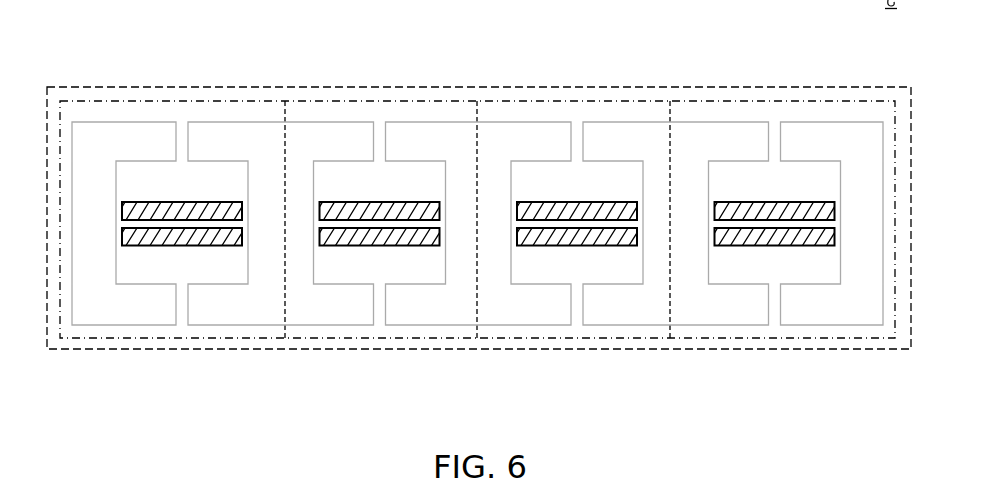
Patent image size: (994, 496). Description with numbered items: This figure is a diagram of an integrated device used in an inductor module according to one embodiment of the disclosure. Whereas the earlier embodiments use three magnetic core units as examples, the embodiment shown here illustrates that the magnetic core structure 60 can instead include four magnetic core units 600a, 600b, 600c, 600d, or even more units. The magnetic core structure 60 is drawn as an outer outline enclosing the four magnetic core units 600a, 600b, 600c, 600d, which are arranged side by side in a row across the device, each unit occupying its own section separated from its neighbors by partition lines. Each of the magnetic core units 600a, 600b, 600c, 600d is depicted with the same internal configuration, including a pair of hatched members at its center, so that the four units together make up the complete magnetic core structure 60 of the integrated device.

The magnetic core structure 60 is at (778, 87).
The magnetic core unit 600a is at (92, 102).
The magnetic core unit 600b is at (332, 102).
The magnetic core unit 600c is at (512, 102).
The magnetic core unit 600d is at (735, 101).